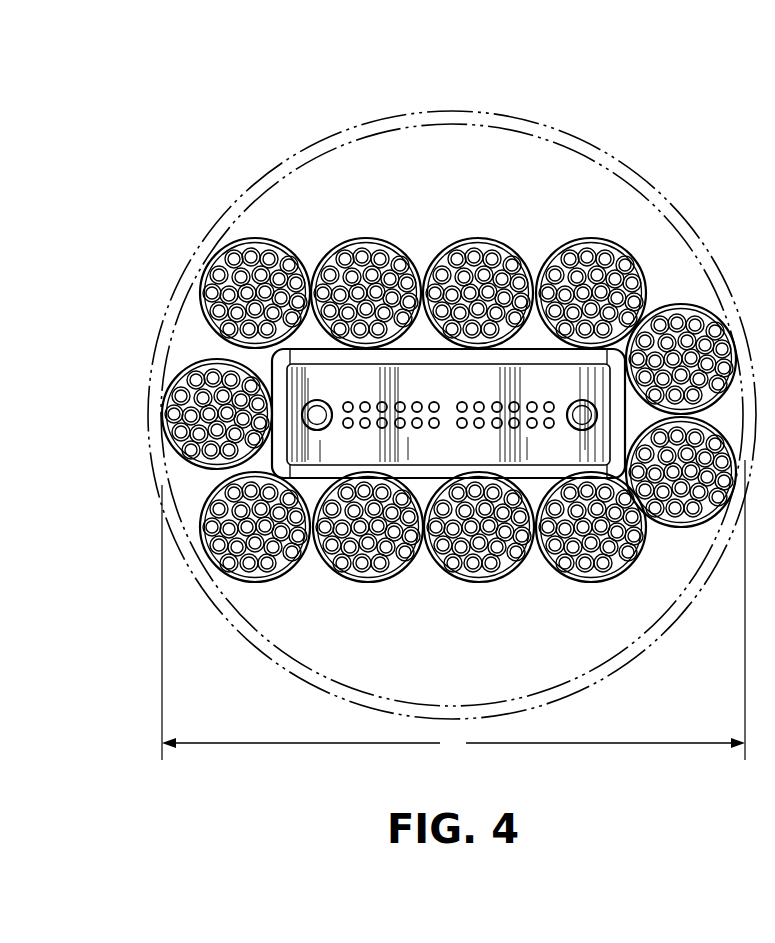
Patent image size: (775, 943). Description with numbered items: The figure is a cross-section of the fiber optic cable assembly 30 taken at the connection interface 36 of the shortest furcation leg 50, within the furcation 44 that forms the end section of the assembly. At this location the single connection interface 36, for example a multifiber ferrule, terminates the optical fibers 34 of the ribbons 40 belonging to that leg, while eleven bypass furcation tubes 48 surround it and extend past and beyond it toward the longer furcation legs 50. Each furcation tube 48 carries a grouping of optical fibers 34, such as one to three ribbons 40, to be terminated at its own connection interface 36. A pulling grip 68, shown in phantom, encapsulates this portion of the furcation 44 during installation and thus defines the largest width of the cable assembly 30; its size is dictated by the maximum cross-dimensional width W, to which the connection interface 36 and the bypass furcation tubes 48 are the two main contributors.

The fiber optic cable assembly 30 is at (228, 74).
The optical fiber 34 is at (338, 258).
The connection interface 36 is at (533, 481).
The ribbon 40 is at (350, 262).
The furcation 44 is at (163, 267).
The furcation tube 48 is at (373, 246).
The furcation leg 50 is at (449, 410).
The pulling grip 68 is at (373, 121).